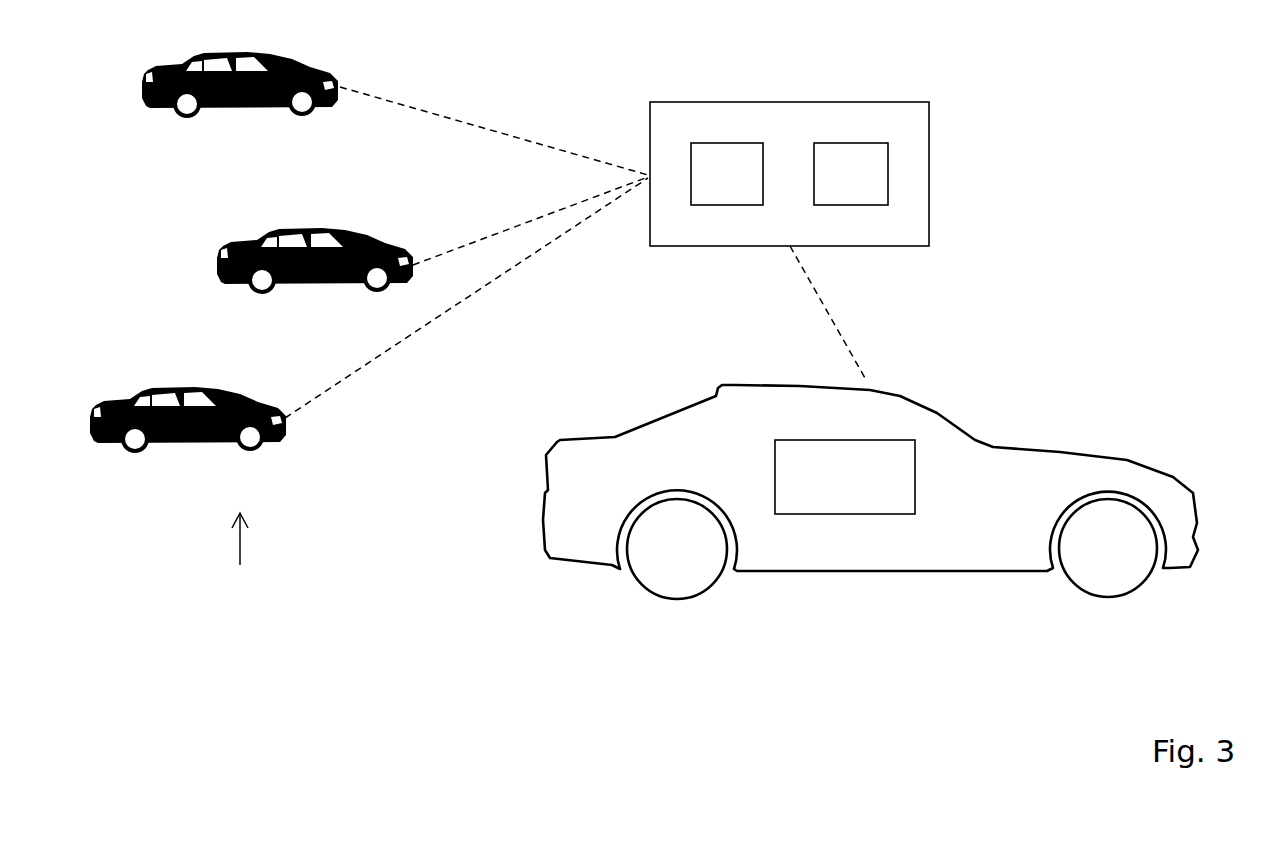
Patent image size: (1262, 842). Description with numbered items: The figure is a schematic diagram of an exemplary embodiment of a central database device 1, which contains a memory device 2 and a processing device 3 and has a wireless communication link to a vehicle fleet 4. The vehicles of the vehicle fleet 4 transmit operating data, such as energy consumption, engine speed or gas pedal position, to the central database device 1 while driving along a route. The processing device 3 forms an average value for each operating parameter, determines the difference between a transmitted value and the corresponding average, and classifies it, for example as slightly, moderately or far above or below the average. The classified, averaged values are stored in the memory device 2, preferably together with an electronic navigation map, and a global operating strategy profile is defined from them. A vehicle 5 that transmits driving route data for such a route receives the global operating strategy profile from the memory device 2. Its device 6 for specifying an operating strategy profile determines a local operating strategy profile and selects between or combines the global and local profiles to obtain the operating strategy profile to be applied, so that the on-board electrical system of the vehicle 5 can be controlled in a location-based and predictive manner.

The central database device 1 is at (929, 163).
The memory device 2 is at (727, 174).
The processing device 3 is at (851, 174).
The vehicle fleet 4 is at (240, 557).
The vehicle 5 is at (938, 413).
The device for specifying an operating strategy profile 6 is at (845, 477).